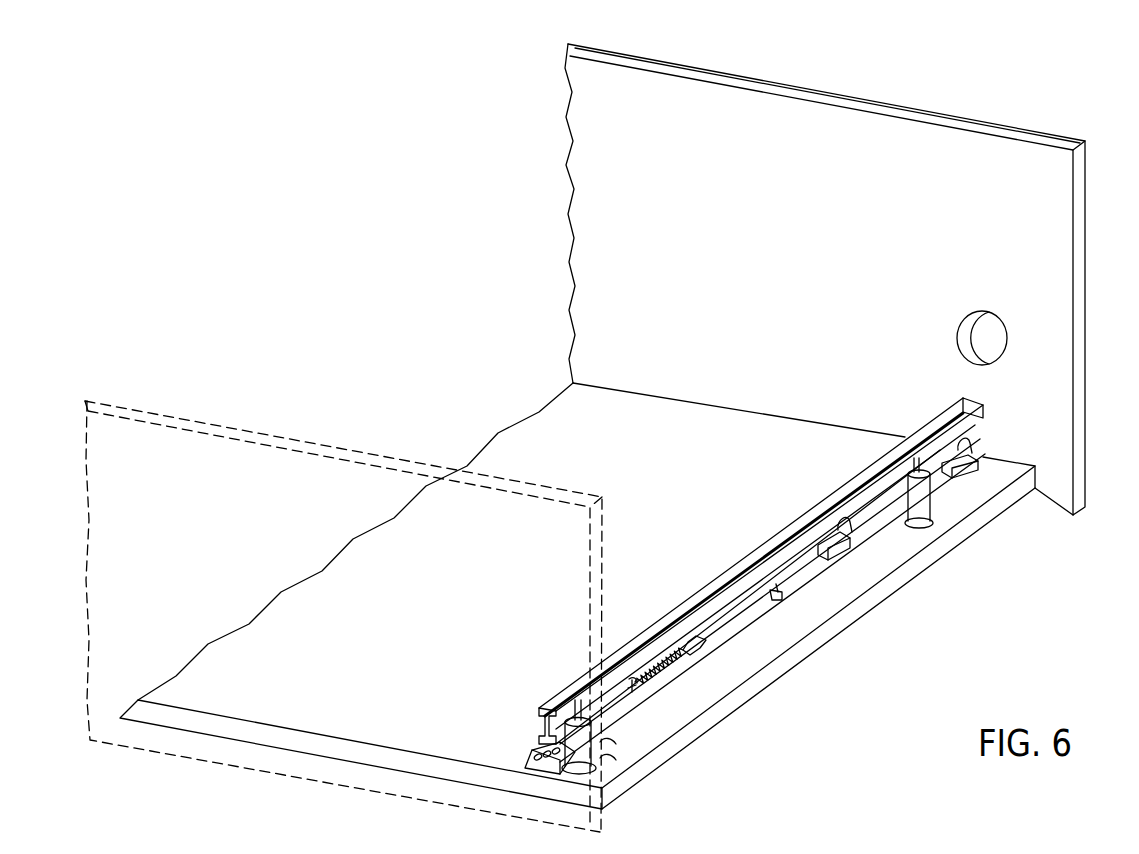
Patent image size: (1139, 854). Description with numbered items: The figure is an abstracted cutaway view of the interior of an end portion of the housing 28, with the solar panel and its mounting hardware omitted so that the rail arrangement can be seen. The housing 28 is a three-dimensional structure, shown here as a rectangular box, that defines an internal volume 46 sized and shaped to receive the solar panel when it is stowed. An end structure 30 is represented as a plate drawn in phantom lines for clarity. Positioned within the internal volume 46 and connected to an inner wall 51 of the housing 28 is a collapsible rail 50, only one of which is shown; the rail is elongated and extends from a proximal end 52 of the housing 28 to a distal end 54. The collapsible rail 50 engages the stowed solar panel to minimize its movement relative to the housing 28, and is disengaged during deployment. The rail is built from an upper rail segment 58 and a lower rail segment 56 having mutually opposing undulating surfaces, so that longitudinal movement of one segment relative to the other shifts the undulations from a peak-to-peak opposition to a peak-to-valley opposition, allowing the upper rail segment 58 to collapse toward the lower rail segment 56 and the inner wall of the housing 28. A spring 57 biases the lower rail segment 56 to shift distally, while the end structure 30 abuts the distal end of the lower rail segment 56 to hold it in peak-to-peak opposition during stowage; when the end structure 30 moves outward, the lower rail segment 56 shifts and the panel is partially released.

The housing 28 is at (997, 128).
The end structure 30 is at (240, 755).
The internal volume 46 is at (1025, 192).
The collapsible rail 50 is at (867, 497).
The inner wall 51 is at (780, 635).
The proximal end 52 is at (1080, 333).
The distal end 54 is at (678, 742).
The lower rail segment 56 is at (807, 568).
The spring 57 is at (670, 675).
The upper rail segment 58 is at (833, 500).